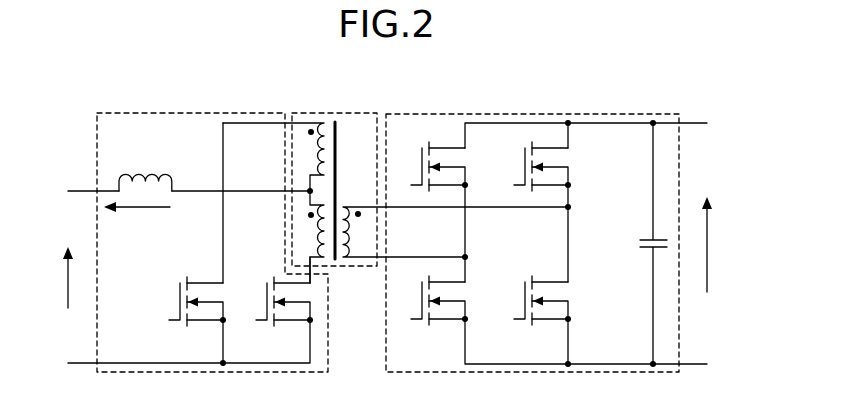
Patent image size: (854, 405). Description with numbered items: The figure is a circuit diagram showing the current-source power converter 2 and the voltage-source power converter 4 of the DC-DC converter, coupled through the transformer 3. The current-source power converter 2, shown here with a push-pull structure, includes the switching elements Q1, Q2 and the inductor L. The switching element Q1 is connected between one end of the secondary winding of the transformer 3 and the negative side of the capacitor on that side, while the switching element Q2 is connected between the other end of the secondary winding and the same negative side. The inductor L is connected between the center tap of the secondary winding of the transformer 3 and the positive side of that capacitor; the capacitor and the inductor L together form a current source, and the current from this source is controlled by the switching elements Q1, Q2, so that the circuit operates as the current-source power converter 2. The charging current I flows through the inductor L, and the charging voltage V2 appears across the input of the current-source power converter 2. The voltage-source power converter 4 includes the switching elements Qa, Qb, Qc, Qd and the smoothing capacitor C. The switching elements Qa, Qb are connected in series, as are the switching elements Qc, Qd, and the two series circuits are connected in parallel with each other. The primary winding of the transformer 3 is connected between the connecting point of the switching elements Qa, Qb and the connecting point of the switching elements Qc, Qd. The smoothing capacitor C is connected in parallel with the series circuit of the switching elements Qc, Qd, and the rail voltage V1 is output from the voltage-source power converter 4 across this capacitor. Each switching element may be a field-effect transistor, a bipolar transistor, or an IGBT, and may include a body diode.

The current-source power converter 2 is at (140, 112).
The transformer 3 is at (337, 112).
The voltage-source power converter 4 is at (621, 112).
The inductor L is at (154, 173).
The smoothing capacitor C is at (651, 238).
The switching element Q1 is at (180, 297).
The switching element Q2 is at (267, 297).
The switching element Qa is at (422, 162).
The switching element Qb is at (422, 296).
The switching element Qc is at (525, 162).
The switching element Qd is at (525, 296).
The charging current I is at (143, 207).
The rail voltage V1 is at (720, 244).
The charging voltage V2 is at (53, 277).